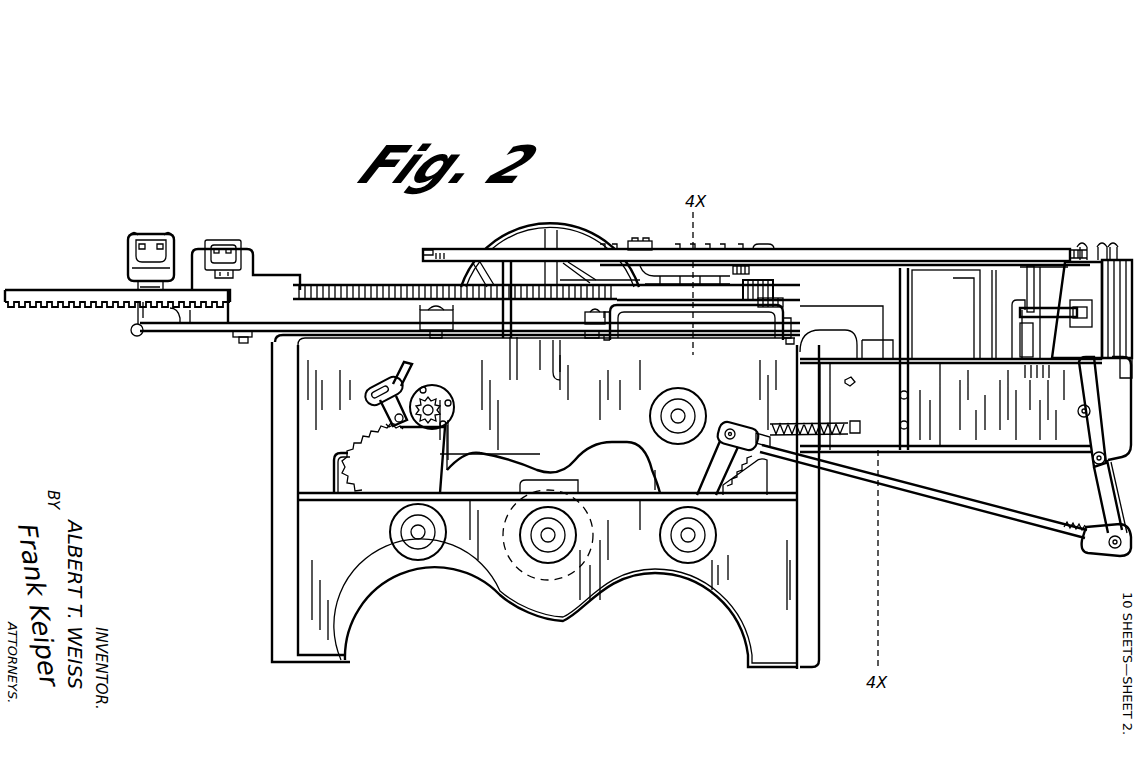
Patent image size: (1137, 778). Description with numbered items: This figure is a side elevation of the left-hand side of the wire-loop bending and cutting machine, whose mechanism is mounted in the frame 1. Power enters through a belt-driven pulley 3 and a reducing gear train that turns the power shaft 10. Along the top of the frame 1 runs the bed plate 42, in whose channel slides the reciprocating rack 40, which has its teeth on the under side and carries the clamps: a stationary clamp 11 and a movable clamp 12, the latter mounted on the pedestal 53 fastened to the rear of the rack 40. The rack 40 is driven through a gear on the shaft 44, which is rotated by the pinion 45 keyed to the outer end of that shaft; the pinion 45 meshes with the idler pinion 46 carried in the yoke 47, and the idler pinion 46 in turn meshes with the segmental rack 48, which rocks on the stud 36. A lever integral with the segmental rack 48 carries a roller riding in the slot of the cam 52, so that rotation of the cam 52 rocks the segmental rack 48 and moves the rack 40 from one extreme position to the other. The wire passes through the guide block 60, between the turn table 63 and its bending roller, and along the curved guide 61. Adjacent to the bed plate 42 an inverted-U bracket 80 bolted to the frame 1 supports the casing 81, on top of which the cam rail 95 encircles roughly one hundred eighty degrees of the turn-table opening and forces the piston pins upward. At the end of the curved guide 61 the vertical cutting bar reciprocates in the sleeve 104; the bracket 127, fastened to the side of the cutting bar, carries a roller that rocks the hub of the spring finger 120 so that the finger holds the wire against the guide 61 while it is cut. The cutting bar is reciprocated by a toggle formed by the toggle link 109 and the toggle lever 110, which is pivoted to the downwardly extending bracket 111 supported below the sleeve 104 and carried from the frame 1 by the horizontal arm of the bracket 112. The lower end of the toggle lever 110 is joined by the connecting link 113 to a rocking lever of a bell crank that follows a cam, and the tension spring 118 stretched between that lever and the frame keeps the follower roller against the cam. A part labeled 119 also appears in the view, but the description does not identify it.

The frame 1 is at (288, 444).
The pulley 3 is at (577, 230).
The power shaft 10 is at (546, 540).
The stationary clamp 11 is at (148, 240).
The movable clamp 12 is at (221, 240).
The stud 36 is at (418, 540).
The reciprocating rack 40 is at (72, 300).
The bed plate 42 is at (277, 313).
The shaft 44 is at (433, 403).
The pinion 45 is at (440, 408).
The idler pinion 46 is at (388, 426).
The yoke 47 is at (387, 389).
The segmental rack 48 is at (432, 478).
The cam 52 is at (586, 452).
The pedestal 53 is at (247, 270).
The guide block 60 is at (645, 240).
The curved guide 61 is at (953, 250).
The turn table 63 is at (752, 272).
The bracket 80 is at (666, 312).
The casing 81 is at (776, 300).
The cam rail 95 is at (757, 281).
The sleeve 104 is at (1083, 287).
The toggle link 109 is at (1088, 339).
The toggle lever 110 is at (1106, 492).
The downwardly extending bracket 111 is at (1122, 411).
The bracket 112 is at (987, 448).
The connecting link 113 is at (946, 498).
The tension spring 118 is at (787, 425).
The arm 119 is at (708, 430).
The spring finger 120 is at (1030, 285).
The bracket 127 is at (1020, 316).